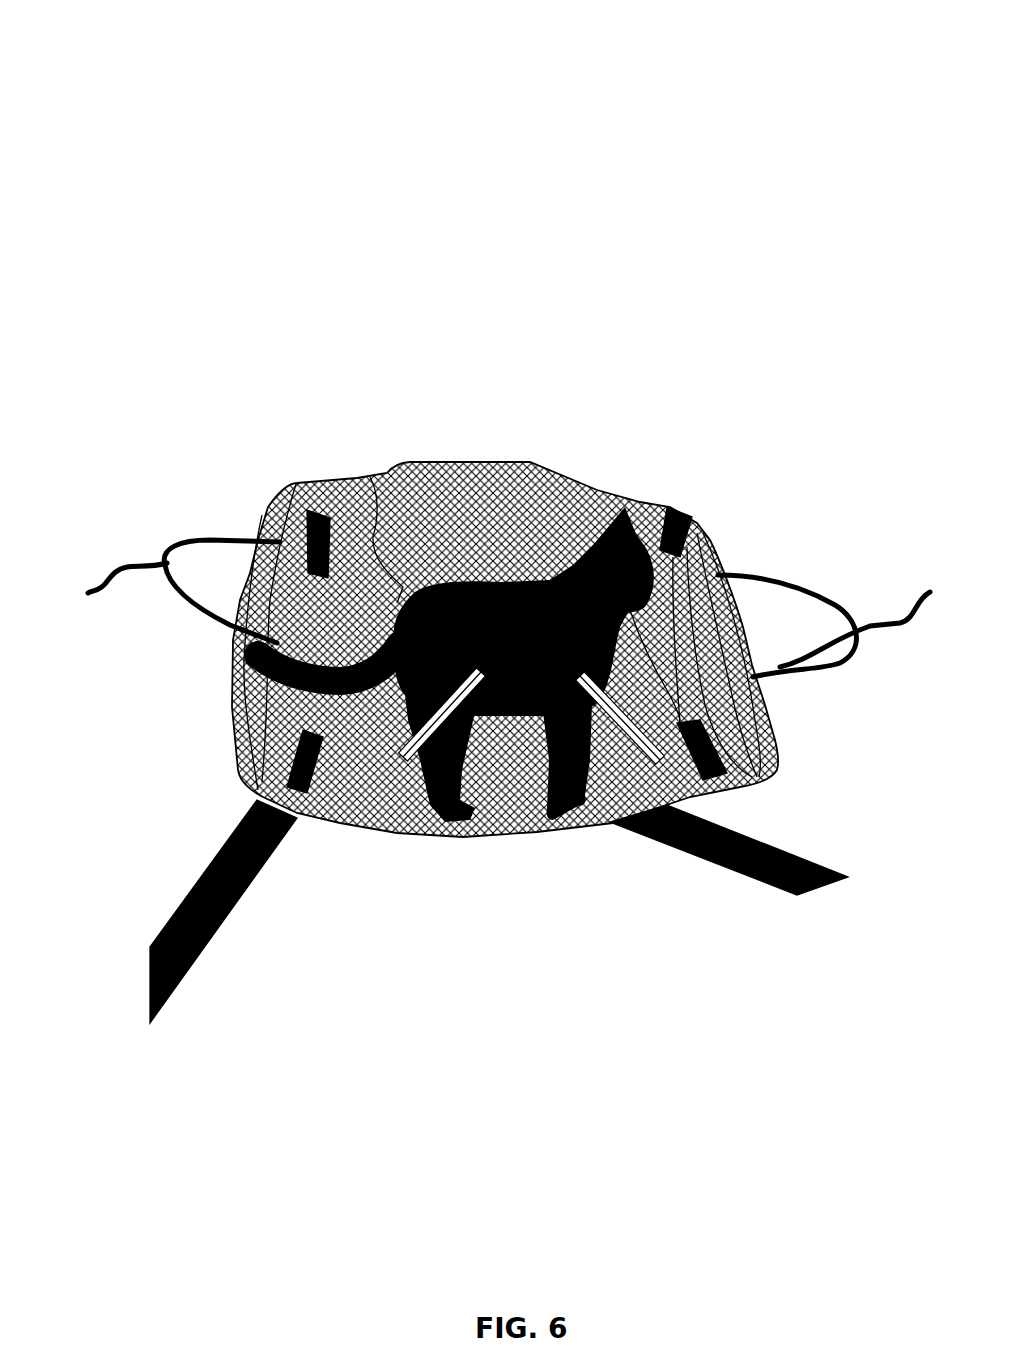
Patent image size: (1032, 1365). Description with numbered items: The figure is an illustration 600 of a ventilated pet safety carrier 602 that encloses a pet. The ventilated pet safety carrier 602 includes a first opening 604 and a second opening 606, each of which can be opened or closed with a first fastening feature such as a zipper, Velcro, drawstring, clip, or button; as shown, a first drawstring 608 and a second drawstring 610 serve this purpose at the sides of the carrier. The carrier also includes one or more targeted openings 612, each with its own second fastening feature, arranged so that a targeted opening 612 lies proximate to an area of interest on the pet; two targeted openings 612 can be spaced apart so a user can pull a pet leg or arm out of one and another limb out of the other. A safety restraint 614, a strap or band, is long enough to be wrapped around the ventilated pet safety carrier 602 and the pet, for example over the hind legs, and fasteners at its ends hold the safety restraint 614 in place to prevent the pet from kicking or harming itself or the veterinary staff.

The illustration 600 is at (143, 67).
The ventilated pet safety carrier 602 is at (365, 498).
The first opening 604 is at (242, 613).
The second opening 606 is at (710, 552).
The first drawstring 608 is at (89, 592).
The second drawstring 610 is at (902, 627).
The targeted opening 612 is at (407, 765).
The safety restraint 614 is at (798, 897).